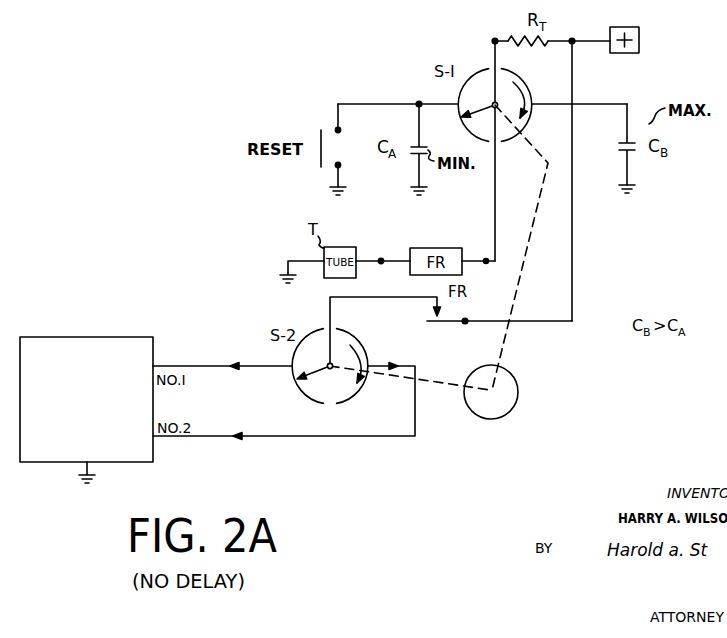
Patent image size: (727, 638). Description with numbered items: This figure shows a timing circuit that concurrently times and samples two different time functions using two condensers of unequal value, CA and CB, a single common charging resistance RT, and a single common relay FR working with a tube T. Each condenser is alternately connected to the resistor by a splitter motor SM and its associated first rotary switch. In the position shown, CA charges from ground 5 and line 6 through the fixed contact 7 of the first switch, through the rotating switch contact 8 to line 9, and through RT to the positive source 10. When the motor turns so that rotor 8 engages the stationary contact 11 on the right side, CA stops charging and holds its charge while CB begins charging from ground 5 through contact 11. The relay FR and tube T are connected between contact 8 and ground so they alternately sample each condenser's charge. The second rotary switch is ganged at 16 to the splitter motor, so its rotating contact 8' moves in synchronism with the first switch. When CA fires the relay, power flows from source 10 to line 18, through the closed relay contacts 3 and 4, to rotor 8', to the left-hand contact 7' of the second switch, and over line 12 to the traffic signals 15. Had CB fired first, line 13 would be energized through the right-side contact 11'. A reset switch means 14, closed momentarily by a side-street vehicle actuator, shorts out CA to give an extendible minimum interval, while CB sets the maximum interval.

The relay contact 3 is at (385, 331).
The relay contact 4 is at (499, 311).
The ground 5 is at (413, 190).
The line 6 is at (431, 104).
The fixed contact of S-1 7 is at (495, 91).
The stationary contact of S-2 7' is at (326, 369).
The rotating switch contact 8 is at (479, 97).
The ganged rotating contact of S-2 8' is at (315, 360).
The line 9 is at (501, 40).
The positive source 10 is at (637, 27).
The stationary contact of S-1 11 is at (528, 92).
The contact of S-2 11' is at (368, 357).
The line 12 is at (212, 357).
The line 13 is at (214, 438).
The reset switch means 14 is at (322, 126).
The traffic signals 15 is at (143, 337).
The ganging to splitter motor 16 is at (497, 354).
The line 18 is at (576, 94).